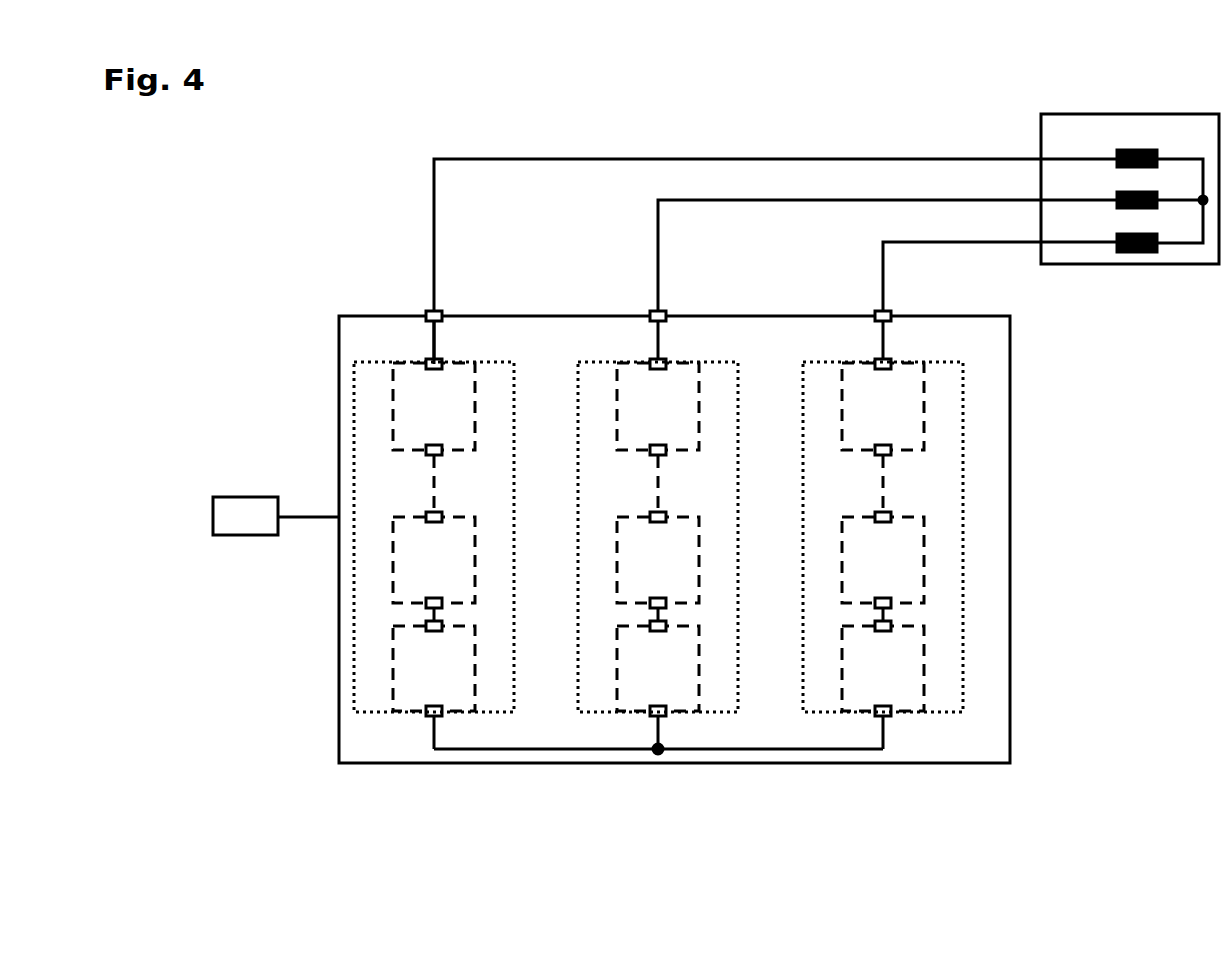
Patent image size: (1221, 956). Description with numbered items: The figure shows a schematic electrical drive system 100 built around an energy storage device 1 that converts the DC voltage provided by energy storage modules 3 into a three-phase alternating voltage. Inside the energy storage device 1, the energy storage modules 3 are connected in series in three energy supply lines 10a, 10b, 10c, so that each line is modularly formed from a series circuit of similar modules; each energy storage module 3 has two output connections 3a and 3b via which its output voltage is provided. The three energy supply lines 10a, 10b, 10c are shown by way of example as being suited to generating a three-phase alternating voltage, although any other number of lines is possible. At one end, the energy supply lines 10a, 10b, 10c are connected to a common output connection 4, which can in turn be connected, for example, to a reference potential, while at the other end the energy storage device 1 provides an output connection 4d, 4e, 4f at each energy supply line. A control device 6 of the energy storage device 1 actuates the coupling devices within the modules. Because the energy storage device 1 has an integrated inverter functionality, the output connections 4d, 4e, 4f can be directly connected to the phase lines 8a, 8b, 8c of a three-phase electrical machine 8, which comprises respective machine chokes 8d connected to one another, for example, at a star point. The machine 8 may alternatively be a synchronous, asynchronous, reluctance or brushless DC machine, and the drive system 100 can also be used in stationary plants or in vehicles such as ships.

The electrical drive system 100 is at (302, 182).
The energy storage device 1 is at (385, 313).
The control device 6 is at (242, 505).
The energy storage module 3 is at (393, 398).
The output connection 3a is at (426, 363).
The output connection 3b is at (426, 454).
The energy supply line 10a is at (380, 718).
The energy supply line 10b is at (605, 718).
The energy supply line 10c is at (830, 718).
The output connection 4 is at (516, 752).
The output connection 4d is at (440, 318).
The output connection 4e is at (664, 318).
The output connection 4f is at (889, 318).
The phase line 8a is at (615, 165).
The phase line 8b is at (773, 200).
The phase line 8c is at (970, 242).
The three-phase electrical machine 8 is at (1152, 116).
The machine choke 8d is at (1117, 153).